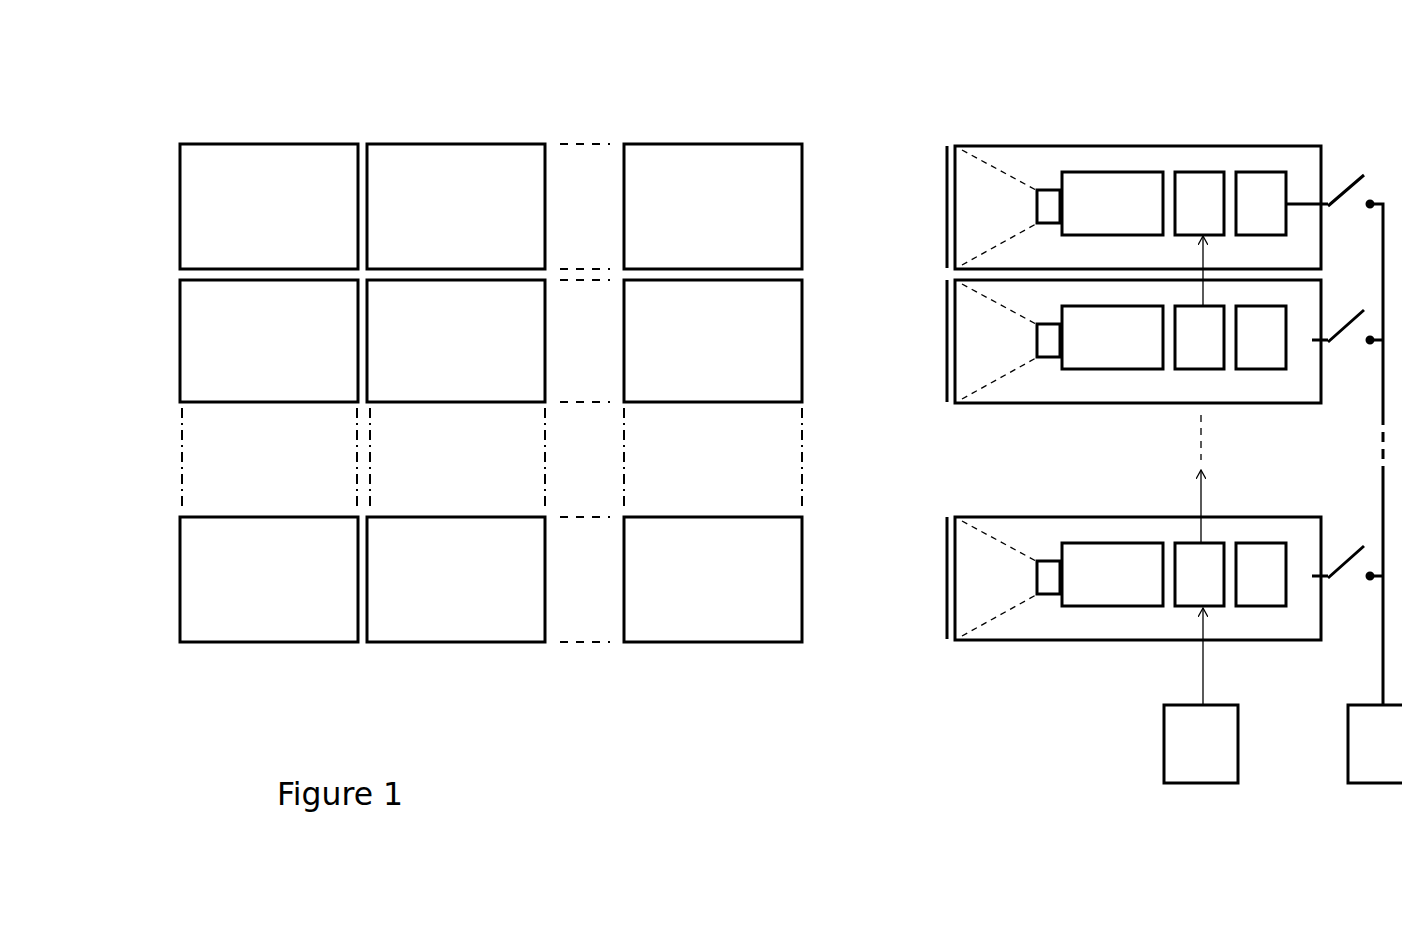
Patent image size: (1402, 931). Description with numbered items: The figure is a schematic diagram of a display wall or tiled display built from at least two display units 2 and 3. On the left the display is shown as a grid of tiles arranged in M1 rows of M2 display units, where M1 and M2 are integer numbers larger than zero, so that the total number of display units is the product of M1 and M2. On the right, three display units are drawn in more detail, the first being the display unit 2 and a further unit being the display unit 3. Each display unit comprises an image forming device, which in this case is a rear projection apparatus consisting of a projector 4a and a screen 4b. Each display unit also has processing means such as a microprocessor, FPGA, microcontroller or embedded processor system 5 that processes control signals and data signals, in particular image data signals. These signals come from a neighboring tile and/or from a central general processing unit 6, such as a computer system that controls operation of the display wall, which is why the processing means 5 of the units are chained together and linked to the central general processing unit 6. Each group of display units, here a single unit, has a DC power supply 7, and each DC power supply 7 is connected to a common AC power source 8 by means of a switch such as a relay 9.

The rows of display units M1 is at (172, 147).
The display units per row M2 is at (802, 140).
The display unit 2 is at (1185, 141).
The display unit 3 is at (1140, 410).
The projector 4a is at (1100, 389).
The screen 4b is at (937, 145).
The embedded processor system 5 is at (1199, 389).
The central general processing unit 6 is at (1201, 695).
The DC power supply 7 is at (1261, 389).
The AC power source 8 is at (1375, 492).
The relay 9 is at (1353, 170).